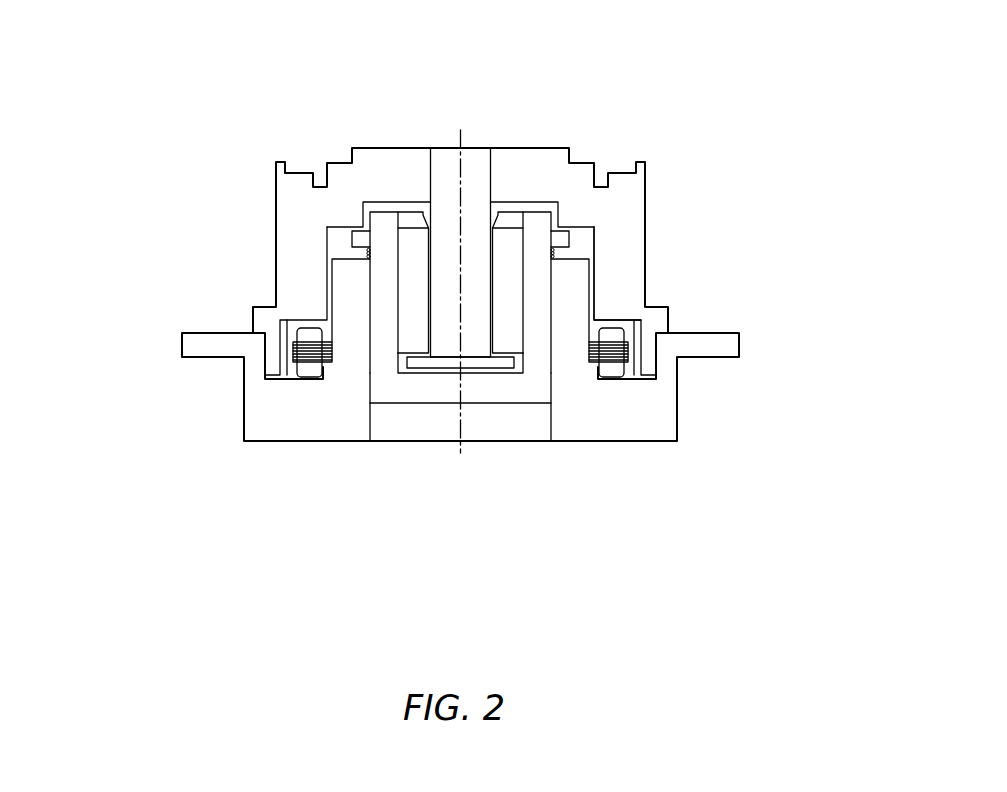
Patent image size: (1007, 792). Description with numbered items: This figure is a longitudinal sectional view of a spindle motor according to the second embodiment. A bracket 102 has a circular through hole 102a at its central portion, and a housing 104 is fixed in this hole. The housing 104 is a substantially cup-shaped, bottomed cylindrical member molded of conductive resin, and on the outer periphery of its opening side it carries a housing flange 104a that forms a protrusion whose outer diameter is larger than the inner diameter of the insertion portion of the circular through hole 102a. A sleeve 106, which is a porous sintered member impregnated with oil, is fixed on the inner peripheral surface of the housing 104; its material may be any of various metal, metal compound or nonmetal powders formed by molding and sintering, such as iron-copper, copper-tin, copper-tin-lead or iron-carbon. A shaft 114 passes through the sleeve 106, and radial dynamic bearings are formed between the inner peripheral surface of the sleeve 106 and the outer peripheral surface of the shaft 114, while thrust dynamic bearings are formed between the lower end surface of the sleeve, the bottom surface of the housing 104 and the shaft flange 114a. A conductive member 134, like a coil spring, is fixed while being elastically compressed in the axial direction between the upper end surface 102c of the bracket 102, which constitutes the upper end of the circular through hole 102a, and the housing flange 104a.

The bracket 102 is at (660, 415).
The circular through hole 102a is at (553, 384).
The upper end surface 102c is at (580, 258).
The housing 104 is at (535, 218).
The housing flange 104a is at (562, 240).
The sleeve 106 is at (410, 242).
The shaft 114 is at (475, 248).
The shaft flange 114a is at (515, 358).
The conductive member 134 is at (560, 253).